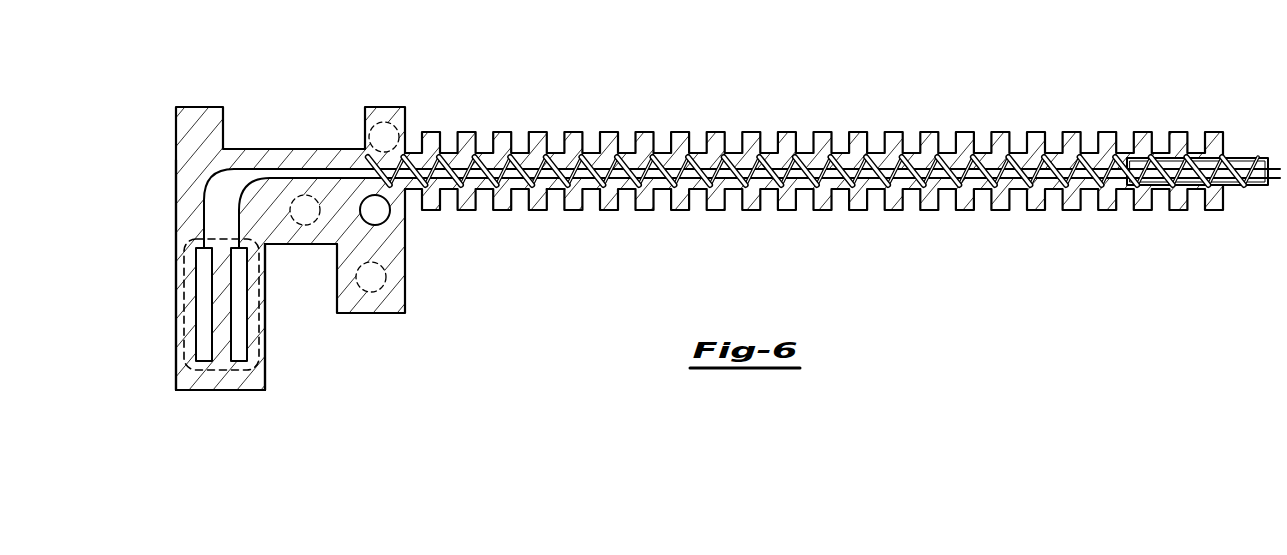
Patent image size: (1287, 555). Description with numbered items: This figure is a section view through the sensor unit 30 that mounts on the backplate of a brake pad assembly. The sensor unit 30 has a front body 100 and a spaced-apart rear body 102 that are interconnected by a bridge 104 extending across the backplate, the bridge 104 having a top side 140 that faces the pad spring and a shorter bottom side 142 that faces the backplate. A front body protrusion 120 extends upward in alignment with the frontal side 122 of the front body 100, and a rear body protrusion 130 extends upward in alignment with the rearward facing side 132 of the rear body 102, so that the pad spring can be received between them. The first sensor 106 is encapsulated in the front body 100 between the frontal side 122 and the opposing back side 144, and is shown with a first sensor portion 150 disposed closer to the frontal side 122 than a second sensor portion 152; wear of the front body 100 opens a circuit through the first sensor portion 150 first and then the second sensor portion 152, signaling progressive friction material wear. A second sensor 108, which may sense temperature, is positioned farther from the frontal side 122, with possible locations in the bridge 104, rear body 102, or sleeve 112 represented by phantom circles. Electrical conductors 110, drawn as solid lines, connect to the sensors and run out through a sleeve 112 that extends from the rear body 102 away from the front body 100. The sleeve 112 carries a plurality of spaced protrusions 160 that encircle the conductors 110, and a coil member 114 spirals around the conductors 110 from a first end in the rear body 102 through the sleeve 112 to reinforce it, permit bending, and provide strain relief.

The sensor unit 30 is at (277, 68).
The front body 100 is at (223, 390).
The rear body 102 is at (368, 313).
The bridge 104 is at (266, 149).
The first sensor 106 is at (257, 292).
The second sensor 108 is at (385, 222).
The electrical conductor 110 is at (372, 191).
The sleeve 112 is at (553, 190).
The coil member 114 is at (699, 190).
The front body protrusion 120 is at (200, 108).
The frontal side 122 is at (177, 307).
The rear body protrusion 130 is at (387, 108).
The rearward facing side 132 is at (405, 270).
The top side 140 is at (643, 250).
The bottom side 142 is at (300, 245).
The back side 144 is at (265, 347).
The first sensor portion 150 is at (190, 355).
The second sensor portion 152 is at (255, 358).
The protrusions 160 is at (822, 132).